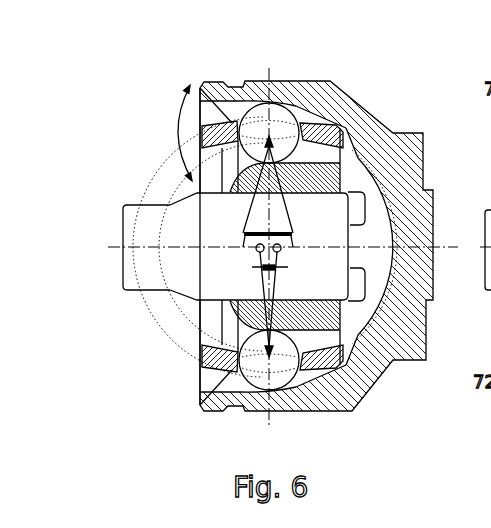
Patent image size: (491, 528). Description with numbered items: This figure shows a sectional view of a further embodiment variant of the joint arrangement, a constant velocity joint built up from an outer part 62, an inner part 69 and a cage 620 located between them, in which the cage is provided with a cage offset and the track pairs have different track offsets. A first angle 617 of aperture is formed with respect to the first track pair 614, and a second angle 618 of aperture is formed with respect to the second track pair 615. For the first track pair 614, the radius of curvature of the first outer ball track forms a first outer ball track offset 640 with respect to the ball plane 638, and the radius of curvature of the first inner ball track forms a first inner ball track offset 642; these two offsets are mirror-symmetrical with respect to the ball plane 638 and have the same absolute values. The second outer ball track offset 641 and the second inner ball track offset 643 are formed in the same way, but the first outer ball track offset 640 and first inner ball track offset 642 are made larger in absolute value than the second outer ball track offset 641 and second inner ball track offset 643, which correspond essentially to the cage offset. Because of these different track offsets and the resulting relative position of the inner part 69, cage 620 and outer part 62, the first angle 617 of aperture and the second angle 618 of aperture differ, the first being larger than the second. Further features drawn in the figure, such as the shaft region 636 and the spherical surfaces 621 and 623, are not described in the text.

The outer part 62 is at (333, 93).
The cage 620 is at (345, 127).
The inner part 69 is at (353, 183).
The second angle of aperture 618 is at (373, 380).
The ball plane 638 is at (276, 392).
The shaft 636 is at (143, 240).
The first outer ball track offset 640 is at (253, 230).
The first inner ball track offset 642 is at (287, 231).
The second inner ball track offset 643 is at (257, 270).
The second outer ball track offset 641 is at (284, 270).
The inner race spherical surface 623 is at (182, 312).
The cage outer spherical surface 621 is at (183, 353).
The second track pair 615 is at (190, 388).
The first track pair 614 is at (160, 115).
The first angle of aperture 617 is at (178, 103).